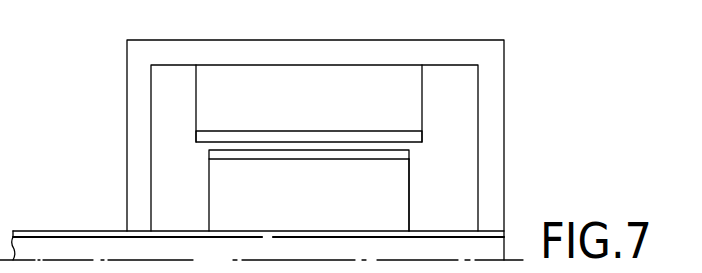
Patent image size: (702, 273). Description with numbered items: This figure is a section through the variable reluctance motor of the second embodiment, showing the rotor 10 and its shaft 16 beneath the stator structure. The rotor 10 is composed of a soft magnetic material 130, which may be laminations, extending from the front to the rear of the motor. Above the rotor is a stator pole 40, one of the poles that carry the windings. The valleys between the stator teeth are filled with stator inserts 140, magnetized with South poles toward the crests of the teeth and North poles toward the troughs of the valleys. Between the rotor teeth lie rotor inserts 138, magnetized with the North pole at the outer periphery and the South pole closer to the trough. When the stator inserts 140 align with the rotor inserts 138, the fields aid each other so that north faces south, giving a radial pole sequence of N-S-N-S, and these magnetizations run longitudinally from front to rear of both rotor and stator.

The rotor 10 is at (398, 190).
The shaft 16 is at (332, 231).
The pole 40 is at (344, 40).
The soft magnetic material 130 is at (211, 191).
The rotor inserts 138 is at (291, 160).
The stator inserts 140 is at (290, 133).